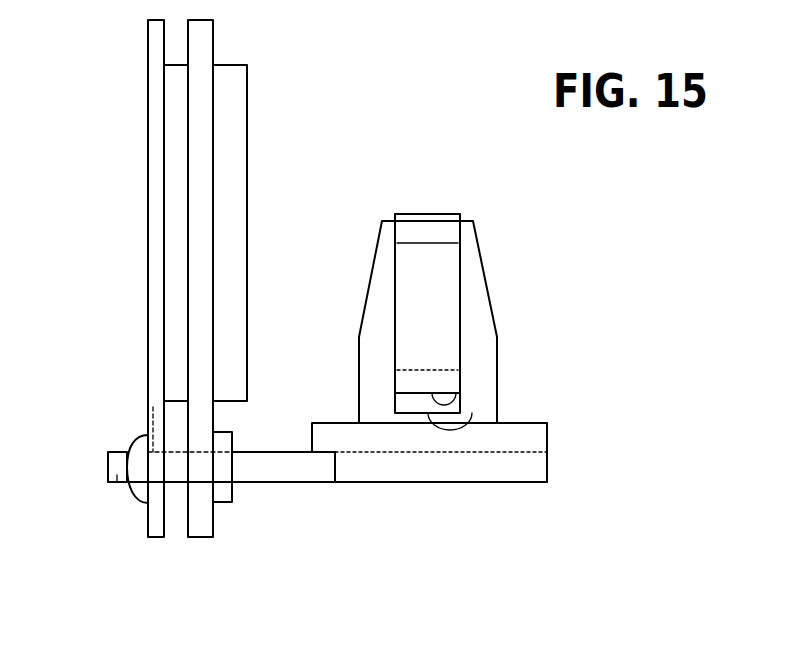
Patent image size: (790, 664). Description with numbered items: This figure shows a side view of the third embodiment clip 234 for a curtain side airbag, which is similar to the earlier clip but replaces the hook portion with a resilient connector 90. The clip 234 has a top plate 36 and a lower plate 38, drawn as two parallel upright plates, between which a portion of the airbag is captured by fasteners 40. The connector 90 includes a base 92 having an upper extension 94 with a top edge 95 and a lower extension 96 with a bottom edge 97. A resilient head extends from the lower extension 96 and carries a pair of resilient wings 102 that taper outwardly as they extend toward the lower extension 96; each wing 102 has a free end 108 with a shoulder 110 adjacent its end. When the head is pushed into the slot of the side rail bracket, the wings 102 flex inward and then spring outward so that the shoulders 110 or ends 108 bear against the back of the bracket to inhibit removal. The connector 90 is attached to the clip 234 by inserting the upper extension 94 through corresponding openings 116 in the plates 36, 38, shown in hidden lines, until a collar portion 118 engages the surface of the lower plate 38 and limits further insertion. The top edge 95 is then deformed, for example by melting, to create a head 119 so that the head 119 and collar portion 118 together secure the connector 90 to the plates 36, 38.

The top plate 36 is at (158, 355).
The lower plate 38 is at (200, 43).
The fasteners 40 is at (228, 105).
The resilient connector 90 is at (455, 510).
The base 92 is at (305, 470).
The upper extension 94 is at (118, 475).
The top edge 95 is at (108, 462).
The lower extension 96 is at (423, 467).
The bottom edge 97 is at (550, 440).
The resilient wings 102 is at (437, 307).
The free end 108 is at (470, 422).
The shoulder 110 is at (450, 403).
The openings 116 is at (153, 407).
The collar portion 118 is at (225, 442).
The head 119 is at (140, 448).
The clip 234 is at (182, 583).